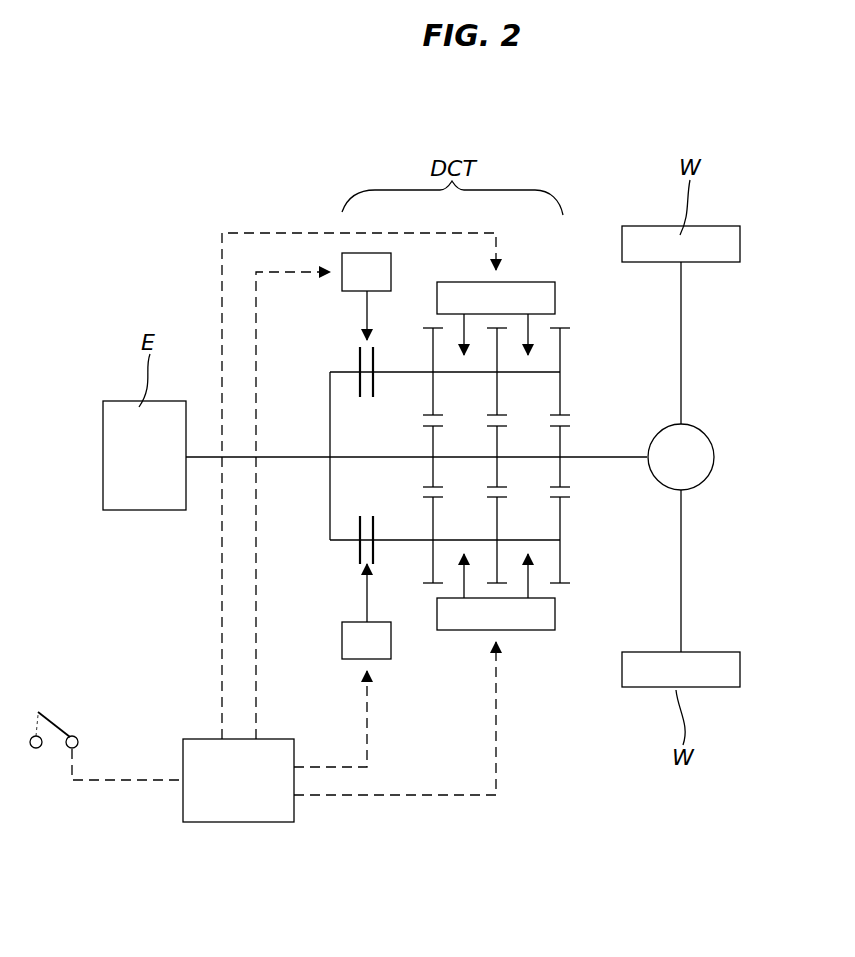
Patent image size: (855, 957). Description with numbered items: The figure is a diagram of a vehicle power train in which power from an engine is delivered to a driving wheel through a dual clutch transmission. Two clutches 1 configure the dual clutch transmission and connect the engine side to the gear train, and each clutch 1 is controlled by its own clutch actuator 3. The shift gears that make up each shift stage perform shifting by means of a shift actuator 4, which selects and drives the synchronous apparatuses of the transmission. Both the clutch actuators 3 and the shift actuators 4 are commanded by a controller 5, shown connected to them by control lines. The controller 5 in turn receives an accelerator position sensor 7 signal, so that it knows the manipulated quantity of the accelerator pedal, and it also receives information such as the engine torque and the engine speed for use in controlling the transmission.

The clutch 1 is at (357, 350).
The clutch actuator 3 is at (391, 260).
The shift actuator 4 is at (535, 290).
The controller 5 is at (240, 812).
The accelerator position sensor (APS) 7 is at (70, 730).